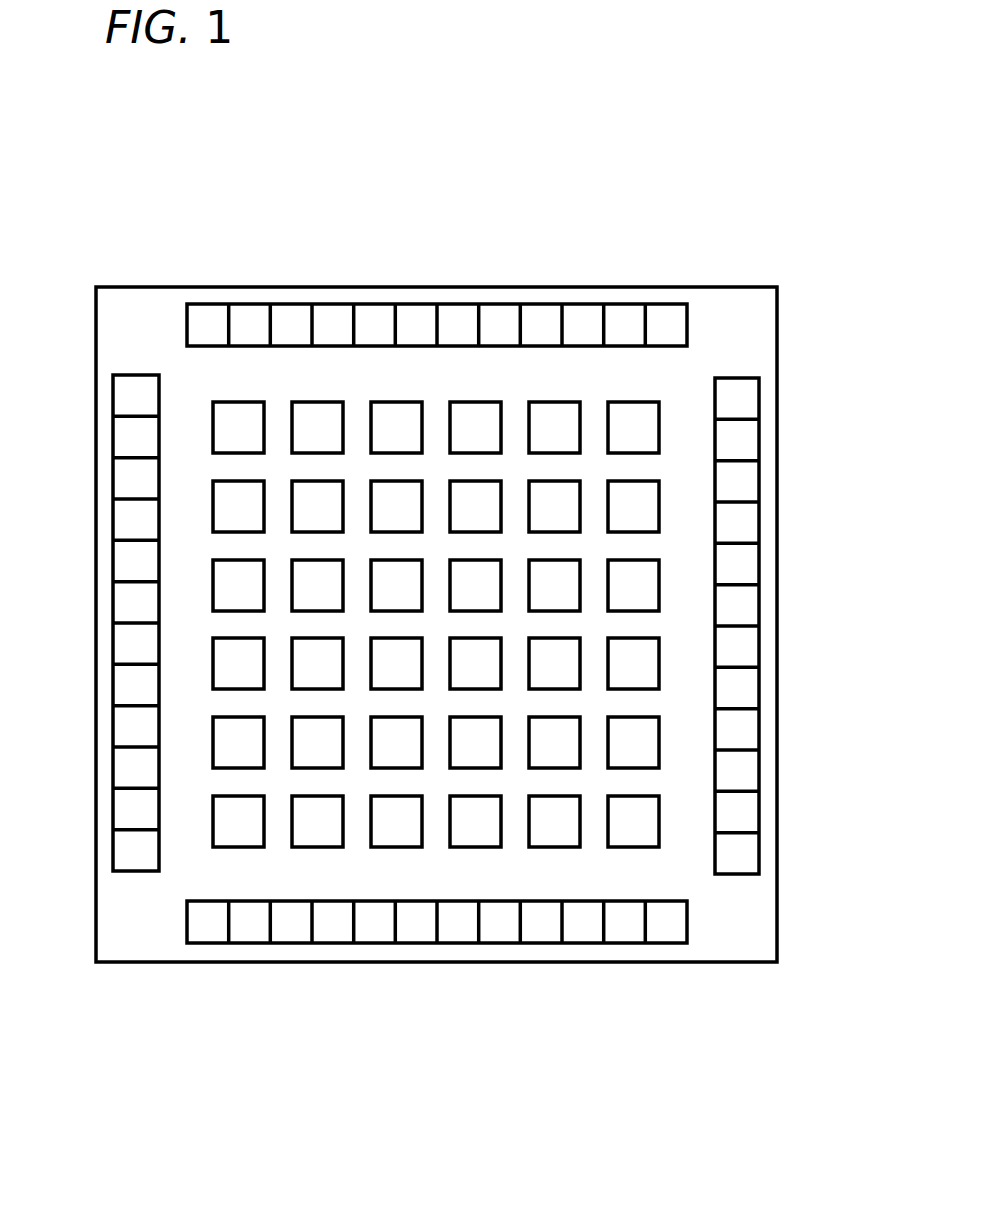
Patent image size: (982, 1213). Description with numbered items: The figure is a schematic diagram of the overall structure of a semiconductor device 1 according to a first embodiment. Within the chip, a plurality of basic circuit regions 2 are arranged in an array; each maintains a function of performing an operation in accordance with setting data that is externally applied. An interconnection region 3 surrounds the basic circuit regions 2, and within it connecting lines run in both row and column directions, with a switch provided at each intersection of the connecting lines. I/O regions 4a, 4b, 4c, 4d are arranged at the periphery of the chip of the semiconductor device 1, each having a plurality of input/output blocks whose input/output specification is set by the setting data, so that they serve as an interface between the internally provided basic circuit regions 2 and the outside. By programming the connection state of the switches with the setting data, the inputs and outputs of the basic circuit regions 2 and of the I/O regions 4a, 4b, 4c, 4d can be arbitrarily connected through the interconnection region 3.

The semiconductor device 1 is at (718, 287).
The basic circuit region 2 is at (635, 429).
The interconnection region 3 is at (598, 550).
The I/O region 4a is at (758, 647).
The I/O region 4b is at (418, 304).
The I/O region 4c is at (113, 645).
The I/O region 4d is at (417, 943).